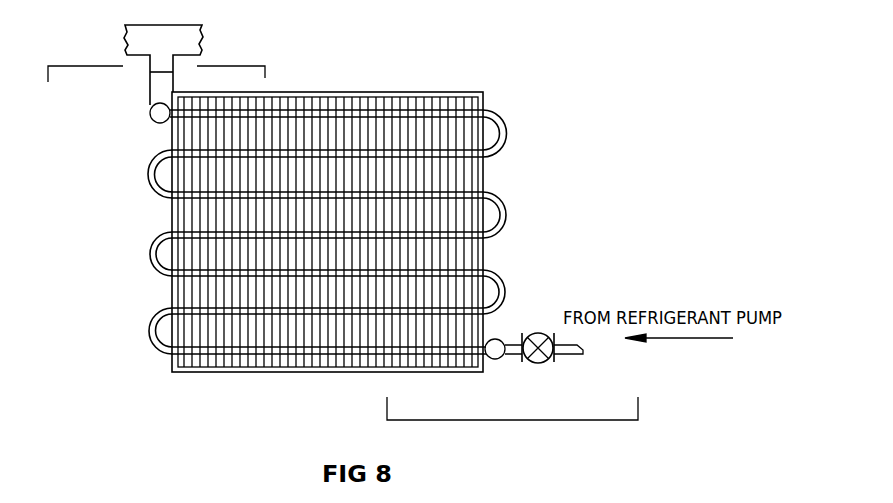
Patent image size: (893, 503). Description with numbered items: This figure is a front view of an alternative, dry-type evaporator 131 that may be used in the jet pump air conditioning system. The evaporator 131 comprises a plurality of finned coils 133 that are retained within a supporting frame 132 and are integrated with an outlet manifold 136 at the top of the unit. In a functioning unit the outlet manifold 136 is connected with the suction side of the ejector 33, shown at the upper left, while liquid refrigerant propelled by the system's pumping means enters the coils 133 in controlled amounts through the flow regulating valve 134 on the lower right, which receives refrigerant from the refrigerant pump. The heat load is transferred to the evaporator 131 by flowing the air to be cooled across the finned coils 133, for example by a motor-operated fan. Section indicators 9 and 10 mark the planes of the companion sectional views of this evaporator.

The ejector 33 is at (202, 33).
The section line 10 is at (157, 85).
The outlet manifold 136 is at (151, 118).
The evaporator 131 is at (488, 93).
The supporting frame 132 is at (188, 373).
The finned coils 133 is at (503, 198).
The flow regulating valve 134 is at (528, 364).
The section line 9 is at (514, 397).